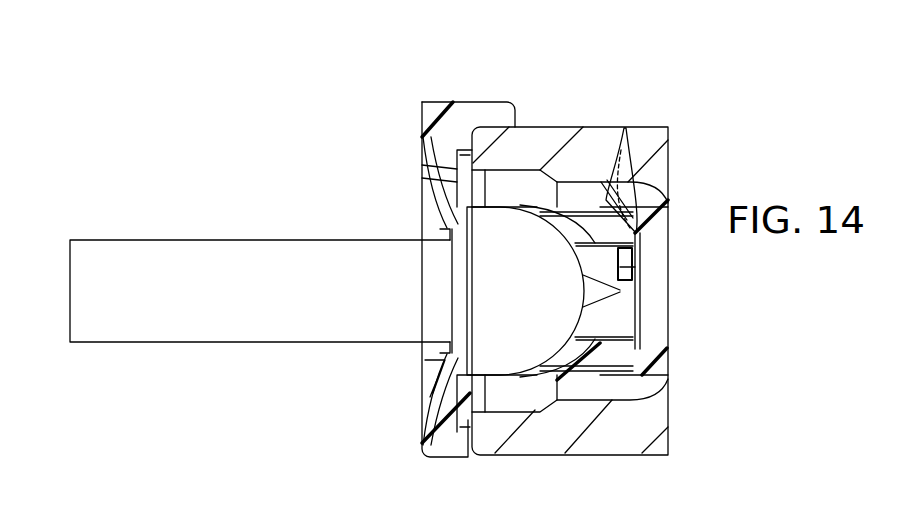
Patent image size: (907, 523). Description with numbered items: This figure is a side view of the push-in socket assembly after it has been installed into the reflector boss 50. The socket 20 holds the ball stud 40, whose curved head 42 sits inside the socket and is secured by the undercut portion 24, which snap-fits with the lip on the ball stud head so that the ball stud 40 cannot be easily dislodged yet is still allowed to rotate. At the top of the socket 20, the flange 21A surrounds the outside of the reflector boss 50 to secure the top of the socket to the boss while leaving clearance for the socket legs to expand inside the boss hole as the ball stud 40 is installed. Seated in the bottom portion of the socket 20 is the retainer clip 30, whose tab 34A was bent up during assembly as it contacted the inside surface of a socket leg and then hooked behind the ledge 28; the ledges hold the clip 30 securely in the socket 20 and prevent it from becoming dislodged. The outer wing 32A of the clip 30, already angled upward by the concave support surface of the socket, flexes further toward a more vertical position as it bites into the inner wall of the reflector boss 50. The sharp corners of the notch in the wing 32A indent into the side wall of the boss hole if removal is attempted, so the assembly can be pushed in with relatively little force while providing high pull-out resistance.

The socket 20 is at (430, 113).
The flange 21A is at (497, 112).
The undercut portion 24 is at (437, 385).
The ledge 28 is at (598, 262).
The retainer clip 30 is at (640, 258).
The wing 32A is at (624, 132).
The tab 34A is at (627, 275).
The ball stud 40 is at (250, 250).
The head 42 is at (530, 353).
The reflector boss 50 is at (657, 417).